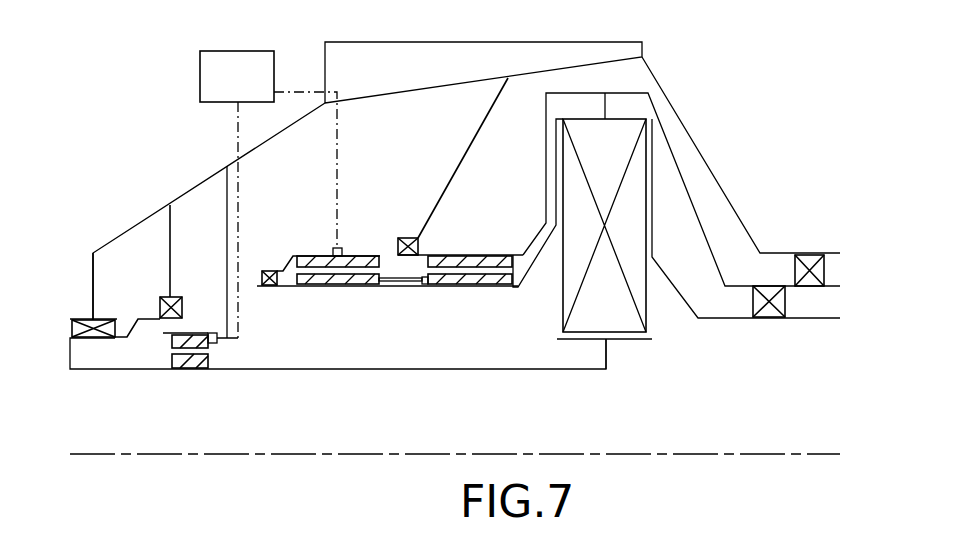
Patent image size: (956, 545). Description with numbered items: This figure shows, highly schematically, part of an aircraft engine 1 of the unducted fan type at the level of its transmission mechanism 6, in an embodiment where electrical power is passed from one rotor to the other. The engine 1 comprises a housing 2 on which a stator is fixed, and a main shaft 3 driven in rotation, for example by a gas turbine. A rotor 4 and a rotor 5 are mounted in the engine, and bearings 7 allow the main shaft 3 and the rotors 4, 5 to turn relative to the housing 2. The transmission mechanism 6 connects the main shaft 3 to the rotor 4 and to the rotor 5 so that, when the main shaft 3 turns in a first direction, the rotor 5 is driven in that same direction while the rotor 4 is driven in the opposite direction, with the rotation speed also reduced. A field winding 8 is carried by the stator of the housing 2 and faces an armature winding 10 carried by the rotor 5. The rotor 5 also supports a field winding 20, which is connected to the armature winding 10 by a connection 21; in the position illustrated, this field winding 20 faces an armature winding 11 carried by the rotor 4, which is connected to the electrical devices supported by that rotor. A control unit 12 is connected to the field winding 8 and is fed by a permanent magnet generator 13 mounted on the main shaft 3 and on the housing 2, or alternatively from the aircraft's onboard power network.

The aircraft engine 1 is at (108, 78).
The housing 2 is at (494, 42).
The main shaft 3 is at (400, 370).
The rotor 4 is at (703, 229).
The rotor 5 is at (524, 288).
The transmission mechanism 6 is at (597, 159).
The bearings 7 is at (86, 320).
The field winding 8 is at (313, 256).
The armature winding 10 is at (346, 284).
The armature winding 11 is at (463, 256).
The control unit 12 is at (226, 88).
The permanent magnet generator 13 is at (236, 354).
The field winding 20 is at (471, 284).
The connection 21 is at (405, 281).